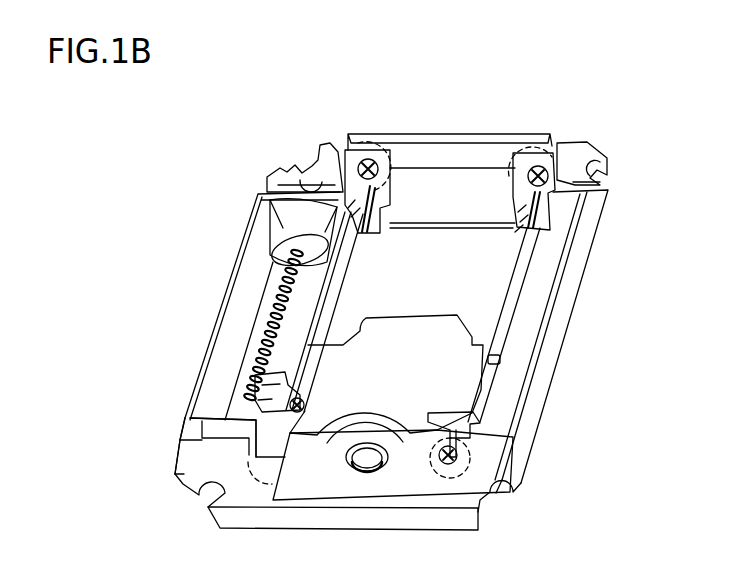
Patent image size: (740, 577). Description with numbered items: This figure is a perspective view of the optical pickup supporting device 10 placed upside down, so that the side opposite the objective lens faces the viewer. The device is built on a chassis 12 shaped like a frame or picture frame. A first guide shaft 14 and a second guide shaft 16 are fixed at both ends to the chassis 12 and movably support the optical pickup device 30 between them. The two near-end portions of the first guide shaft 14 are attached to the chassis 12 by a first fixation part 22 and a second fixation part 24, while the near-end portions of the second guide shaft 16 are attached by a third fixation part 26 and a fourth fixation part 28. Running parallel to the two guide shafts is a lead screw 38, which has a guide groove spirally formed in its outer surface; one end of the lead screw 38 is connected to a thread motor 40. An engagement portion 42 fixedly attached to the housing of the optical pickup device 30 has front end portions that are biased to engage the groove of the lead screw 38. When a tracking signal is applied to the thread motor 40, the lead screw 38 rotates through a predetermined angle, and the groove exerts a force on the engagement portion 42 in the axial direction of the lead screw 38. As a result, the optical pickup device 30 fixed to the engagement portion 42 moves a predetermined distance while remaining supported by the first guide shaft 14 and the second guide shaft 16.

The optical pickup supporting device 10 is at (391, 306).
The chassis 12 is at (445, 133).
The first guide shaft 14 is at (343, 282).
The second guide shaft 16 is at (518, 282).
The first fixation part 22 is at (250, 461).
The second fixation part 24 is at (322, 146).
The third fixation part 26 is at (575, 168).
The fourth fixation part 28 is at (477, 451).
The optical pickup device 30 is at (427, 387).
The lead screw 38 is at (270, 320).
The thread motor 40 is at (293, 228).
The engagement portion 42 is at (247, 407).